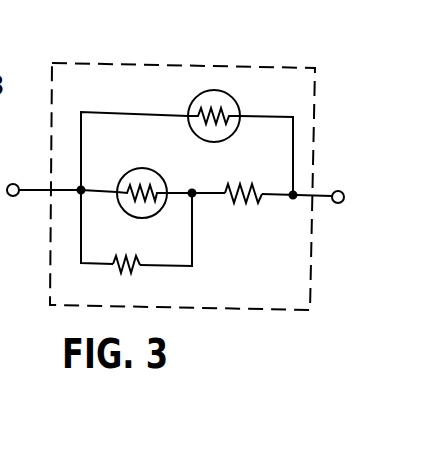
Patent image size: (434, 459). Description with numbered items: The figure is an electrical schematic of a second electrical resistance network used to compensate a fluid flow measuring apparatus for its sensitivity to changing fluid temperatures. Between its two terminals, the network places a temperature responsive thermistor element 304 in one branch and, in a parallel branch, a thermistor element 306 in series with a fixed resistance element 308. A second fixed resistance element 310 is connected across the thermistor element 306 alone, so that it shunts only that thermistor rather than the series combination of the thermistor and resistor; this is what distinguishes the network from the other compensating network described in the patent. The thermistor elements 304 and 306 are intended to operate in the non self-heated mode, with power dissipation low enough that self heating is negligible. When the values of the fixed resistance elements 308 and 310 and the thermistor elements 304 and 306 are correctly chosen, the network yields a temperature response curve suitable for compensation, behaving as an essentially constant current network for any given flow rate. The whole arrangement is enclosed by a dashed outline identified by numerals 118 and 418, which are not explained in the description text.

The dashed enclosure / circuit unit 118 is at (316, 69).
The circuit assembly 418 is at (315, 98).
The thermistor element 304 is at (194, 98).
The thermistor element 306 is at (151, 167).
The fixed resistance element 308 is at (257, 184).
The fixed resistance element 310 is at (114, 258).